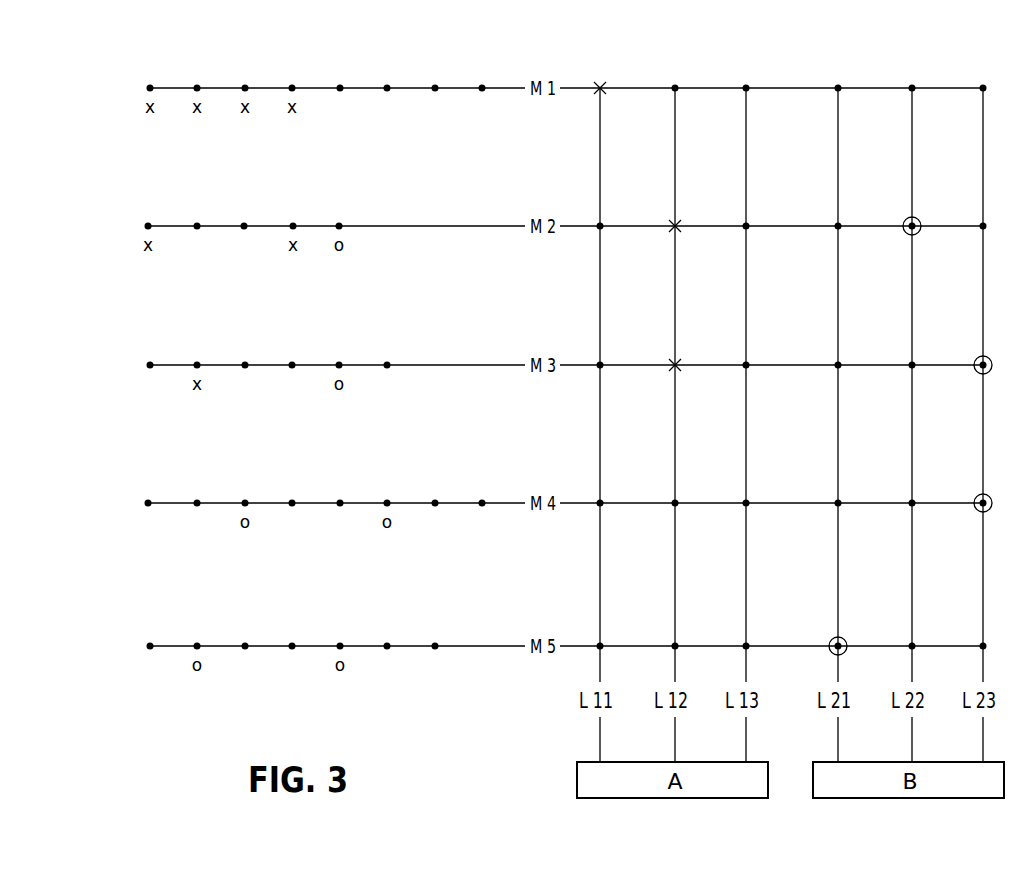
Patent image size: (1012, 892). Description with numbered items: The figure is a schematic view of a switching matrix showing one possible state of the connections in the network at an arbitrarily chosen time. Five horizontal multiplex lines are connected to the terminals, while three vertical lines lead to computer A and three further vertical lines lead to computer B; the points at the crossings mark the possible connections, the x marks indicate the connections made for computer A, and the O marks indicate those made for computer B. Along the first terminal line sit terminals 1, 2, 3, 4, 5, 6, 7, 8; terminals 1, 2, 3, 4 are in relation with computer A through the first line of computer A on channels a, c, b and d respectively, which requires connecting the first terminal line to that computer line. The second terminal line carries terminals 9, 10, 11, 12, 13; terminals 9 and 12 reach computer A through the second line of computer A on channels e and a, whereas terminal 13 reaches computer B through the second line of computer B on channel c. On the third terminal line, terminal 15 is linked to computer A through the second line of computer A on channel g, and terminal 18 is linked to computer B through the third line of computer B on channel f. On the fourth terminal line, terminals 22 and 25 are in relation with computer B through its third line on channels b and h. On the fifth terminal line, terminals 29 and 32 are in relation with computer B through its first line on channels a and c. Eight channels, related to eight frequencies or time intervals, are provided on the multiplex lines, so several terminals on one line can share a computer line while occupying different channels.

The terminal 1 is at (150, 73).
The terminal 2 is at (197, 73).
The terminal 3 is at (245, 73).
The terminal 4 is at (292, 73).
The terminal 5 is at (340, 73).
The terminal 6 is at (387, 73).
The terminal 7 is at (435, 73).
The terminal 8 is at (482, 73).
The terminal 9 is at (148, 211).
The terminal 10 is at (197, 211).
The terminal 11 is at (244, 211).
The terminal 12 is at (293, 211).
The terminal 13 is at (339, 211).
The terminal 15 is at (197, 350).
The terminal 18 is at (339, 350).
The terminal 22 is at (245, 488).
The terminal 25 is at (387, 488).
The terminal 29 is at (197, 631).
The terminal 32 is at (340, 631).